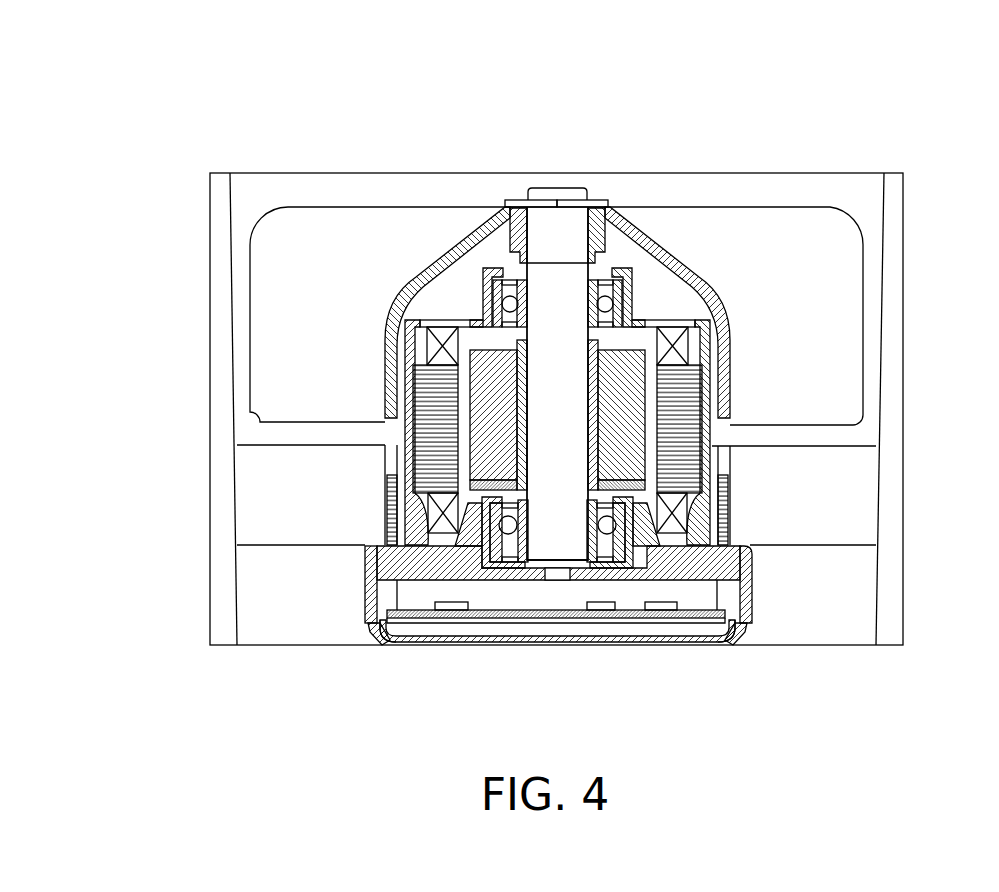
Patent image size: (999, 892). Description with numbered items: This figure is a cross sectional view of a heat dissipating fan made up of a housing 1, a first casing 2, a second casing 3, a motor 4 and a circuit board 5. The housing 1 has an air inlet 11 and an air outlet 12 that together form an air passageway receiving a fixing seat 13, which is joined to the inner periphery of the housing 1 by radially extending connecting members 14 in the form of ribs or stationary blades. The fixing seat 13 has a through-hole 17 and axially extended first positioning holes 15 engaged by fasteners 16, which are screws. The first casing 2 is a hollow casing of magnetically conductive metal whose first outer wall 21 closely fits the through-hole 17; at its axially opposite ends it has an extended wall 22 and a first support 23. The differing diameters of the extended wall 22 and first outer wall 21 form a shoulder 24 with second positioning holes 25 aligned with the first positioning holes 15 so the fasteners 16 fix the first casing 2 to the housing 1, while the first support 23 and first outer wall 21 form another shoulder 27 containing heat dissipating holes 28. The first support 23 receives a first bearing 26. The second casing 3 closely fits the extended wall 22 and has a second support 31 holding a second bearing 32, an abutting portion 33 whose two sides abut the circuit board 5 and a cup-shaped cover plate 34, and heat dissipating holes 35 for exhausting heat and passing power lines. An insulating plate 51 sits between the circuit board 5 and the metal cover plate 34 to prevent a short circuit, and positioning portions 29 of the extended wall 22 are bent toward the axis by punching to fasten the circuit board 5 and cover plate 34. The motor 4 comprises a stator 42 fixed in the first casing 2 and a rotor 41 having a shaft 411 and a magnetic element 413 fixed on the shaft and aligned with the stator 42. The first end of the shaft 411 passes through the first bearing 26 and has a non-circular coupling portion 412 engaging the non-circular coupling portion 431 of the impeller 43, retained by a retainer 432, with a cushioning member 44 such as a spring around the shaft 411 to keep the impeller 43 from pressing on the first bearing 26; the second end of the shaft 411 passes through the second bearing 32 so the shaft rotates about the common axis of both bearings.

The housing 1 is at (285, 136).
The air inlet 11 is at (257, 173).
The air outlet 12 is at (255, 645).
The fixing seat 13 is at (382, 462).
The connecting members 14 is at (283, 533).
The first positioning holes 15 is at (393, 452).
The fasteners 16 is at (382, 510).
The through-hole 17 is at (726, 461).
The first casing 2 is at (779, 588).
The first outer wall 21 is at (790, 436).
The extended wall 22 is at (752, 618).
The first support 23 is at (636, 293).
The shoulder 24 is at (748, 548).
The second positioning holes 25 is at (357, 547).
The first bearing 26 is at (620, 288).
The shoulder 27 is at (697, 323).
The heat dissipating holes 28 is at (404, 337).
The positioning portions 29 is at (375, 640).
The second casing 3 is at (470, 640).
The second support 31 is at (445, 612).
The second bearing 32 is at (620, 612).
The abutting portion 33 is at (716, 642).
The cover plate 34 is at (400, 640).
The heat dissipating holes 35 is at (665, 612).
The motor 4 is at (127, 200).
The rotor 41 is at (477, 347).
The shaft 411 is at (555, 547).
The coupling portion 412 is at (560, 200).
The magnetic element 413 is at (630, 405).
The stator 42 is at (453, 320).
The impeller 43 is at (445, 225).
The coupling portion 431 is at (543, 200).
The retainer 432 is at (602, 200).
The cushioning member 44 is at (487, 568).
The circuit board 5 is at (518, 618).
The insulating plate 51 is at (580, 623).